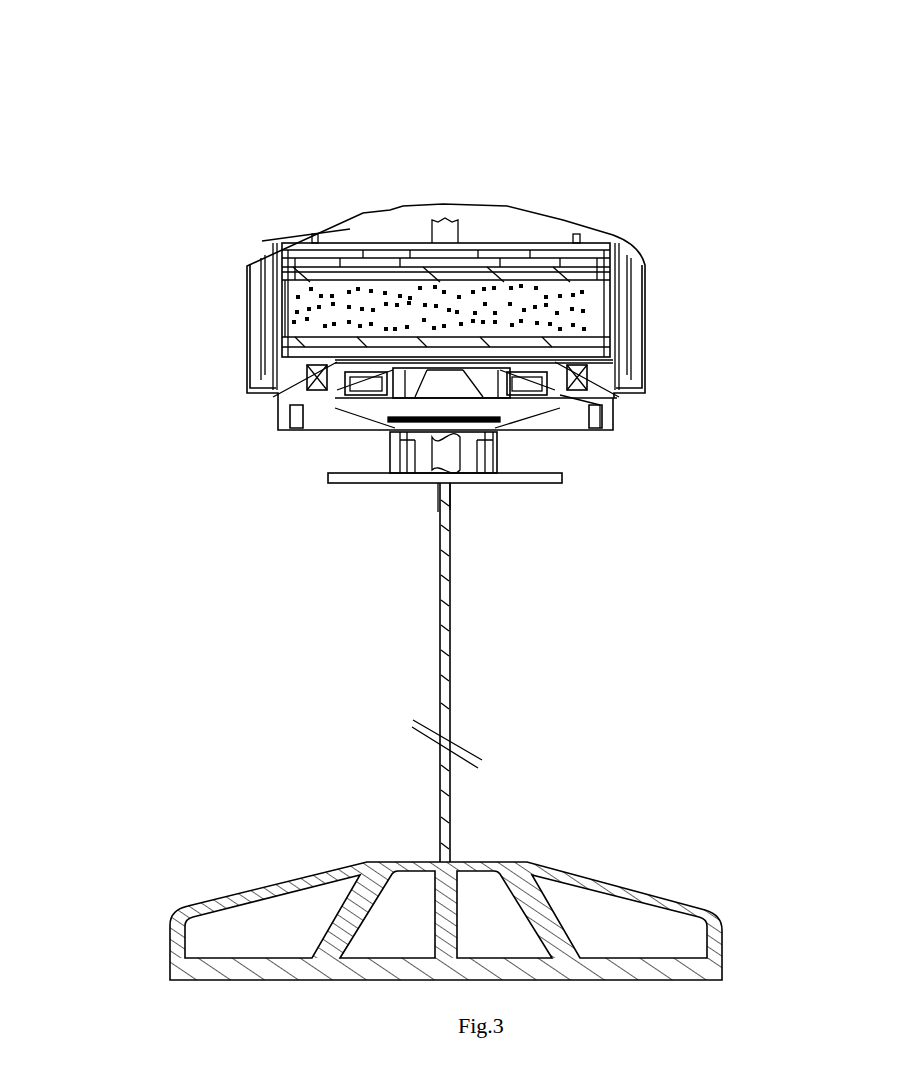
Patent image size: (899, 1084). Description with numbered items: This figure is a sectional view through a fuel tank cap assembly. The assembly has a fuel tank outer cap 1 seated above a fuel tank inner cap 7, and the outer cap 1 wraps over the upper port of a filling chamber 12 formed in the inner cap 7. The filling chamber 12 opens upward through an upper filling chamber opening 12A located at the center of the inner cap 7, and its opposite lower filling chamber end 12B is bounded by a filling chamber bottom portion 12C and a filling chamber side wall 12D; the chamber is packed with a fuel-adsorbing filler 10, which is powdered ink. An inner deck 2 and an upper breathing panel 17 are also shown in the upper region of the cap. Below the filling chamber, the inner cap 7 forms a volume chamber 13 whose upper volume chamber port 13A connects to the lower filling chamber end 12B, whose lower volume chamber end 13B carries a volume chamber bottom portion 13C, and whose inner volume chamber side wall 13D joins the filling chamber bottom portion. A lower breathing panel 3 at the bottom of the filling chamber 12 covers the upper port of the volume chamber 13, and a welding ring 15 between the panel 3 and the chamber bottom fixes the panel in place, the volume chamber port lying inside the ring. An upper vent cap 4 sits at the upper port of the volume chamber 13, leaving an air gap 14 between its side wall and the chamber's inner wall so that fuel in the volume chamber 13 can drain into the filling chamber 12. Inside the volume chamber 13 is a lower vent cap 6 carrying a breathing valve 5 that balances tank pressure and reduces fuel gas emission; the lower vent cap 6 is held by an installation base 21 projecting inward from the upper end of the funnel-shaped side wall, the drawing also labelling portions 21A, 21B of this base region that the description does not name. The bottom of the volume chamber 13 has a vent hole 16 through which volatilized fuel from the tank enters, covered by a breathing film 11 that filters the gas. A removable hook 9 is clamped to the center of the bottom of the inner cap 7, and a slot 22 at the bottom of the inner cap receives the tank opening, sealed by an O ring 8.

The fuel tank outer cap 1 is at (460, 292).
The inner deck 2 is at (590, 227).
The lower breathing panel 3 is at (610, 335).
The upper vent cap 4 is at (647, 362).
The breathing valve 5 is at (575, 415).
The lower vent cap 6 is at (560, 405).
The fuel tank inner cap 7 is at (262, 340).
The O ring 8 is at (283, 302).
The hook 9 is at (450, 862).
The fuel-adsorbing filler 10 is at (285, 300).
The breathing film 11 is at (490, 428).
The filling chamber 12 is at (320, 300).
The upper filling chamber opening 12A is at (503, 255).
The lower filling chamber end 12B is at (400, 360).
The filling chamber bottom portion 12C is at (312, 362).
The filling chamber side wall 12D is at (280, 332).
The volume chamber 13 is at (380, 408).
The upper volume chamber port 13A is at (455, 362).
The lower volume chamber end 13B is at (462, 435).
The volume chamber bottom portion 13C is at (425, 428).
The inner volume chamber side wall 13D is at (560, 377).
The air gap 14 is at (613, 385).
The welding ring 15 is at (645, 318).
The vent hole 16 is at (410, 413).
The upper breathing panel 17 is at (585, 275).
The installation base 21 is at (305, 400).
The strut 21A is at (350, 408).
The fastener 21B is at (327, 385).
The slot 22 is at (335, 412).